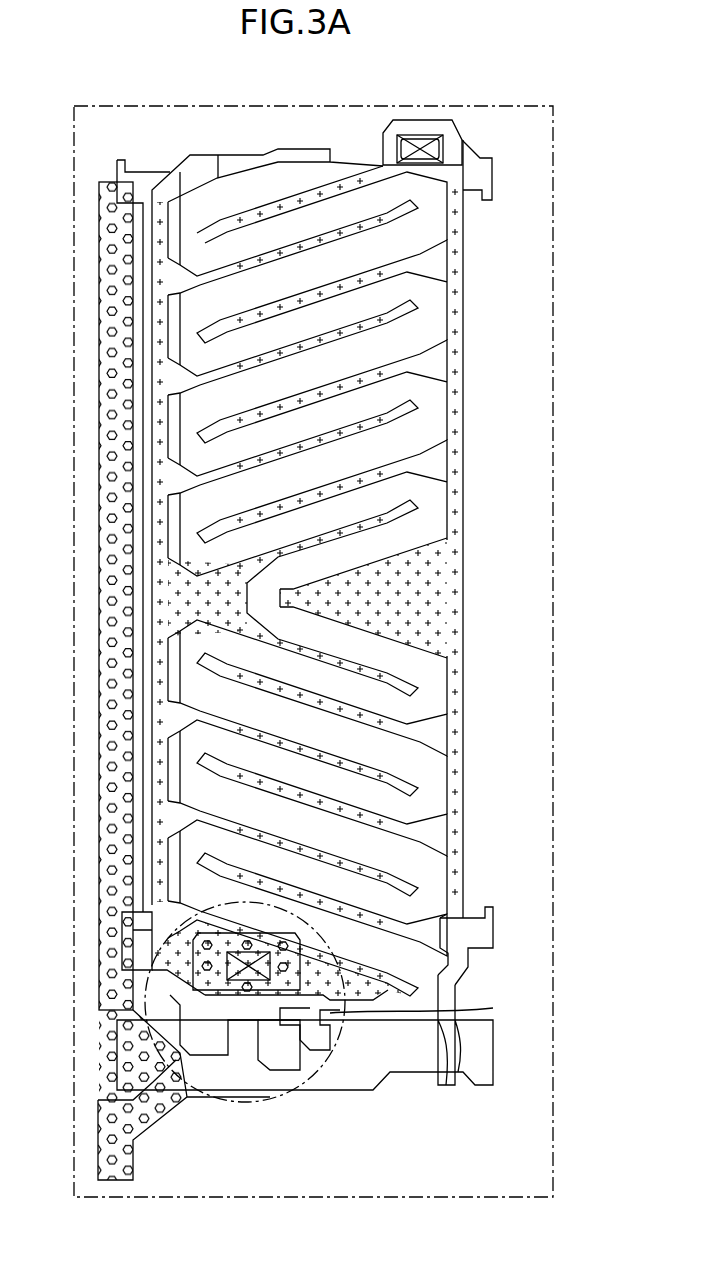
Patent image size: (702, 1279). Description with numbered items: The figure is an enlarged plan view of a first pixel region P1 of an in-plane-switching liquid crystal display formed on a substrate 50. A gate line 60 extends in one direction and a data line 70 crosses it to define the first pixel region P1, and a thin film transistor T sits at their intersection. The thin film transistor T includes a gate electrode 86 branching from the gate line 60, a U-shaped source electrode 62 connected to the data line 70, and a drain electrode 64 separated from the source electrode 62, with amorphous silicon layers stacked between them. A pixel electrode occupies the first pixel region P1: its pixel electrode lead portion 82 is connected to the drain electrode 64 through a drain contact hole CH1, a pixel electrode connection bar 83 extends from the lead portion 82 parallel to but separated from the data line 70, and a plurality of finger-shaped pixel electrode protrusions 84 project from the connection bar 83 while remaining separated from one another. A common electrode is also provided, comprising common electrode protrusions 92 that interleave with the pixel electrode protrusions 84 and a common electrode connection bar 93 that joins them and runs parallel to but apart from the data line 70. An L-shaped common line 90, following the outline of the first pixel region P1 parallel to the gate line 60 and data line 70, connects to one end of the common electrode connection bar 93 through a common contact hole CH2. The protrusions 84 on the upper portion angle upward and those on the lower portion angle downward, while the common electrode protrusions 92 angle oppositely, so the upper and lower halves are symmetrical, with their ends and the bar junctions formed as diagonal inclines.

The substrate 50 is at (488, 1126).
The gate line 60 is at (485, 1050).
The source electrode 62 is at (300, 1085).
The drain electrode 64 is at (250, 1085).
The data line 70 is at (110, 998).
The pixel electrode lead portion 82 is at (400, 985).
The pixel electrode connection bar 83 is at (150, 408).
The pixel electrode protrusions 84 is at (414, 503).
The gate electrode 86 is at (493, 1008).
The common line 90 is at (492, 172).
The common electrode protrusions 92 is at (405, 442).
The common electrode connection bar 93 is at (462, 300).
The drain contact hole CH1 is at (175, 898).
The common contact hole CH2 is at (425, 135).
The first pixel region P1 is at (323, 105).
The thin film transistor T is at (212, 1100).